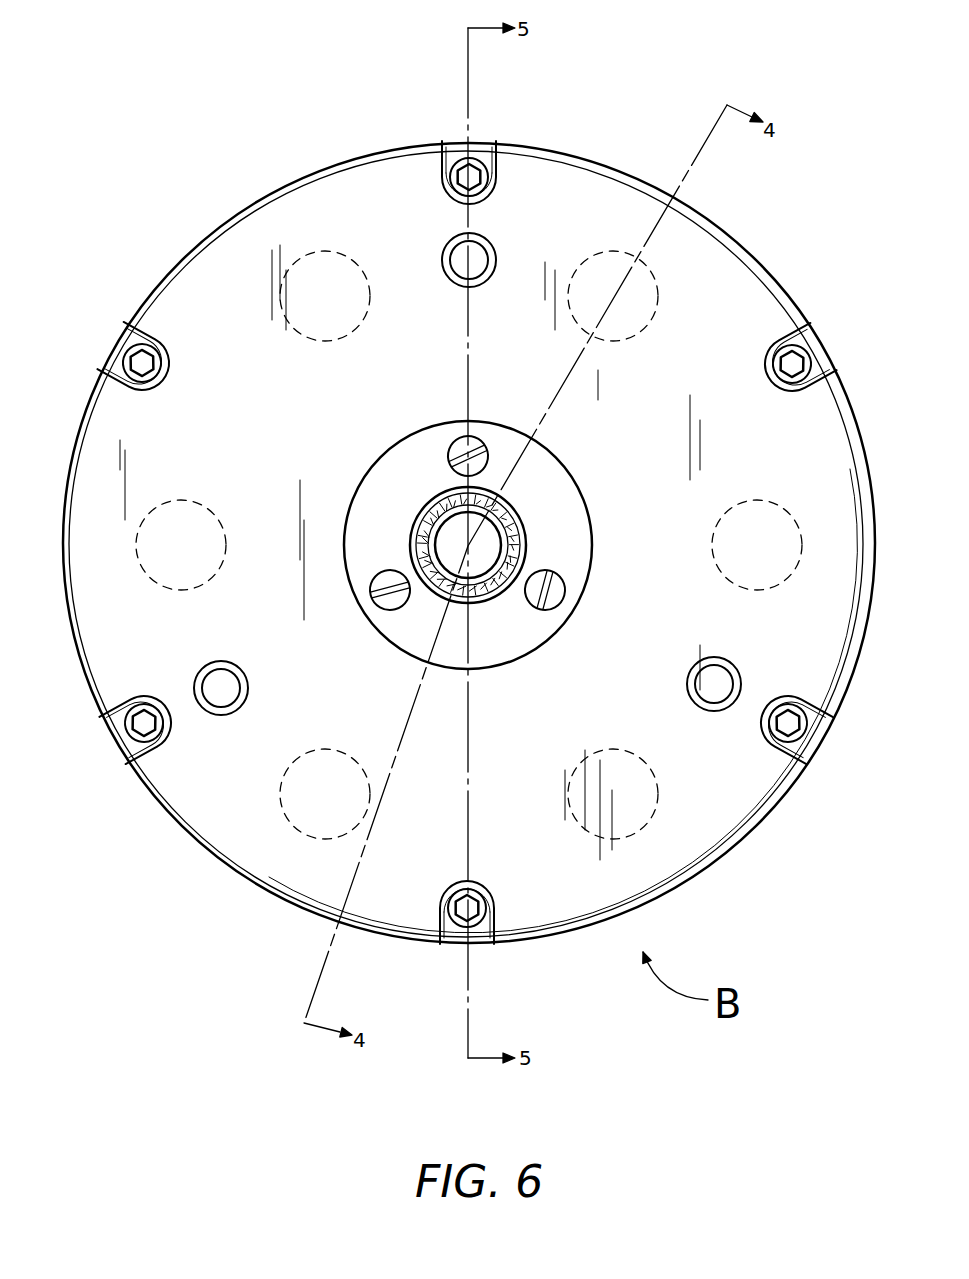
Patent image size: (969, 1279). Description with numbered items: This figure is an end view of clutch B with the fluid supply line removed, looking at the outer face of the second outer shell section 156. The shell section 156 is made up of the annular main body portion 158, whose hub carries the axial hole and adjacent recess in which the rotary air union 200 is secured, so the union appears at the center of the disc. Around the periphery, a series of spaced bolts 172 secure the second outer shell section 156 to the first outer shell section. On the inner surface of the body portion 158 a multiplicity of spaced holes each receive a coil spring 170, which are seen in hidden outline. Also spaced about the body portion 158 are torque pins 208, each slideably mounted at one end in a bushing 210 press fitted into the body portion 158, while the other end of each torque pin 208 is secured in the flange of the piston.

The second outer shell section 156 is at (770, 272).
The annular main body portion 158 is at (316, 446).
The coil spring 170 is at (370, 280).
The bolts 172 is at (482, 173).
The rotary air union 200 is at (512, 512).
The torque pins 208 is at (476, 246).
The bushing 210 is at (487, 266).